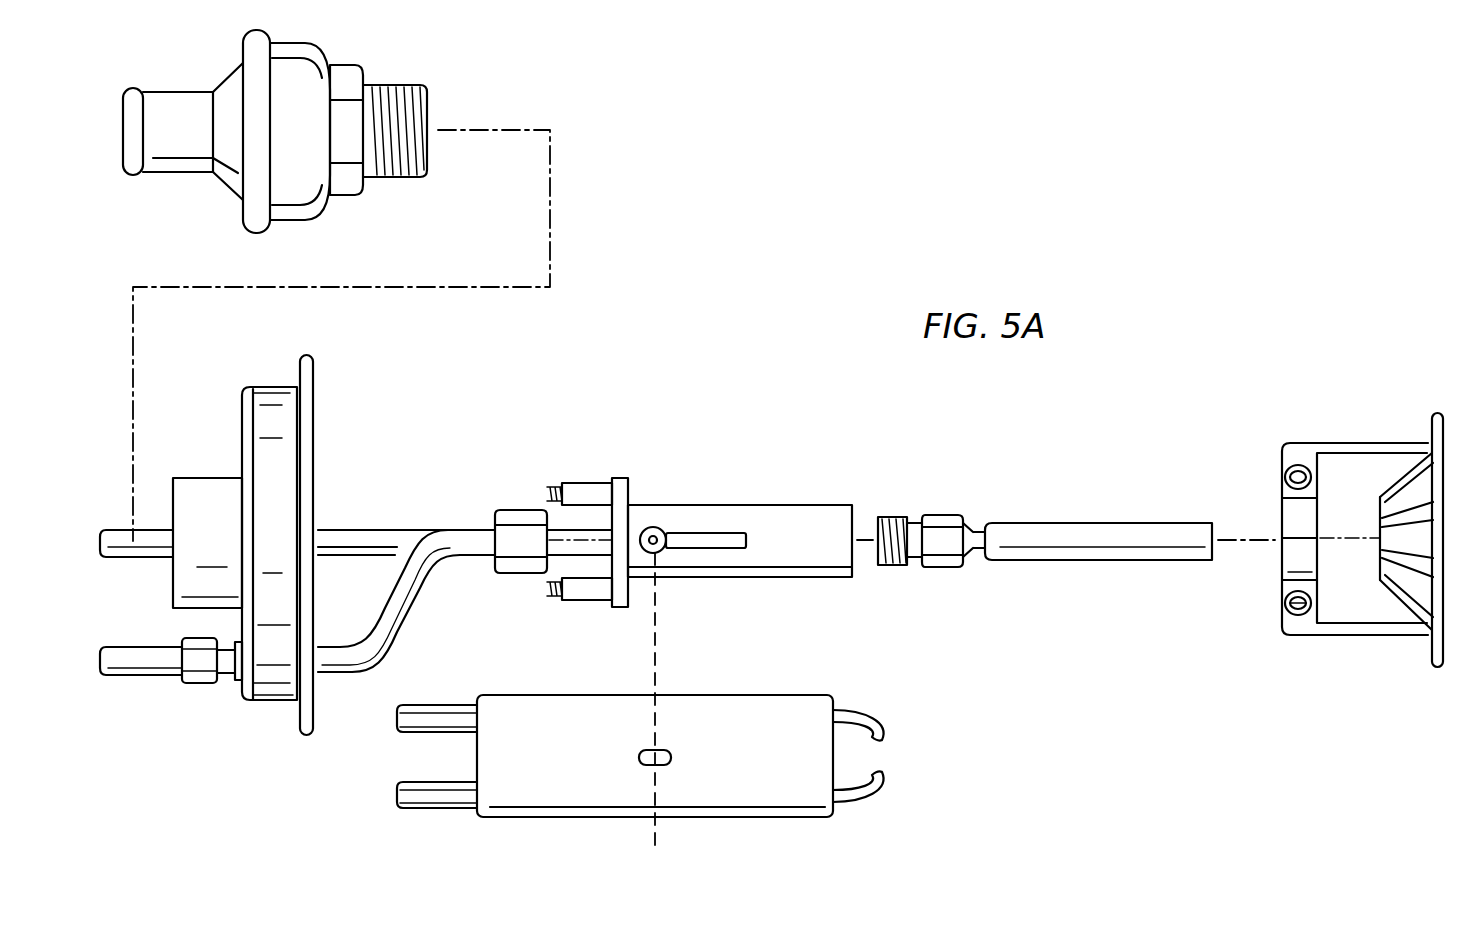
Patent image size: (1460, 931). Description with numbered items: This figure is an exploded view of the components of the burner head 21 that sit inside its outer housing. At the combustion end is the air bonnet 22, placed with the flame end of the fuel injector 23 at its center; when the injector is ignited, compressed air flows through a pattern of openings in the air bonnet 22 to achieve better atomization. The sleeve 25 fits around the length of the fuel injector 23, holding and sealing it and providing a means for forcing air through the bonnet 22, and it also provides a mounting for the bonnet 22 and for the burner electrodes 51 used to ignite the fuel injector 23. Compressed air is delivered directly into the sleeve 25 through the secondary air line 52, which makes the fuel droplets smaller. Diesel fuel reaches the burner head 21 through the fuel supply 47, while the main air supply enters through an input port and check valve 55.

The burner head 21 is at (714, 372).
The air bonnet 22 is at (1430, 424).
The fuel injector 23 is at (1115, 523).
The sleeve 25 is at (790, 505).
The fuel supply 47 is at (406, 612).
The burner electrodes 51 is at (780, 695).
The secondary air line 52 is at (373, 529).
The check valve 55 is at (184, 91).